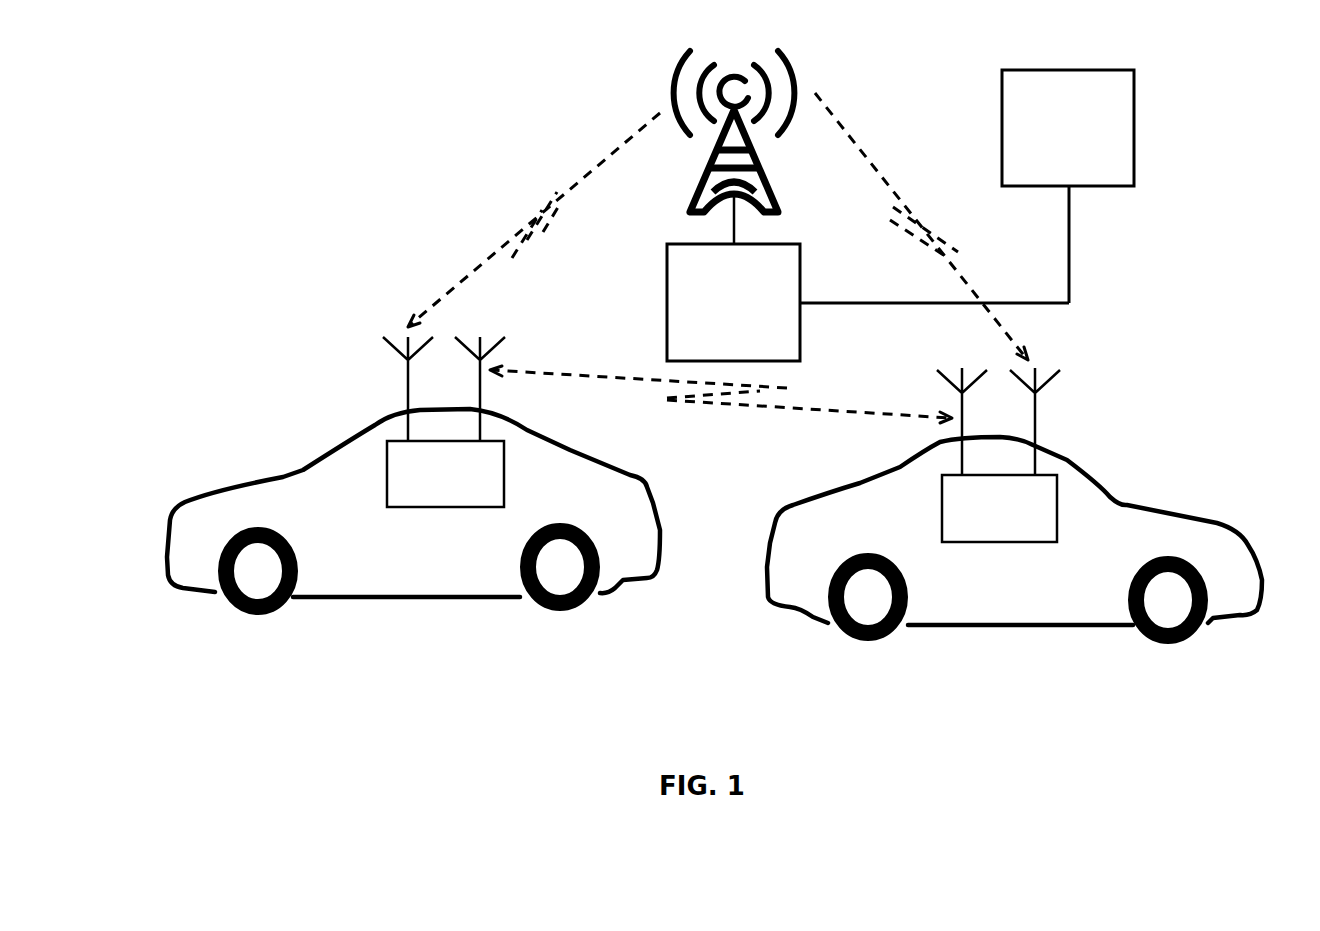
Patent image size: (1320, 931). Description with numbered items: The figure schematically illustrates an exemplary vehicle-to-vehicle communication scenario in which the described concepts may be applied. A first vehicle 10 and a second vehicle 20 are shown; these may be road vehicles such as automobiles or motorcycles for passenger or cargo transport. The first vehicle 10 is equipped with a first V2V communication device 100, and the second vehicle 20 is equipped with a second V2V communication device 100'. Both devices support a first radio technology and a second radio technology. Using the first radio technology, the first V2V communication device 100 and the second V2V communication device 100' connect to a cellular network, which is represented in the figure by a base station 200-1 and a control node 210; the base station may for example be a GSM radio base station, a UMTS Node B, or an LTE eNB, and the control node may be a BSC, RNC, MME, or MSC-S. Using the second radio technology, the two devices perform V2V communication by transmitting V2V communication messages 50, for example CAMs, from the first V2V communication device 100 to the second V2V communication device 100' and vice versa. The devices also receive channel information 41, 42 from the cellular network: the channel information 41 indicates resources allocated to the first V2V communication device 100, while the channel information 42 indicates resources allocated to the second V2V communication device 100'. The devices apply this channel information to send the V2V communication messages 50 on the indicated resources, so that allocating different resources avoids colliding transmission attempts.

The first vehicle 10 is at (388, 597).
The second vehicle 20 is at (937, 625).
The channel information 41 is at (503, 230).
The channel information 42 is at (875, 158).
The V2V communication messages 50 is at (728, 403).
The first V2V communication device 100 is at (444, 449).
The second V2V communication device 100' is at (998, 481).
The base station 200-1 is at (800, 336).
The control node 210 is at (1134, 160).